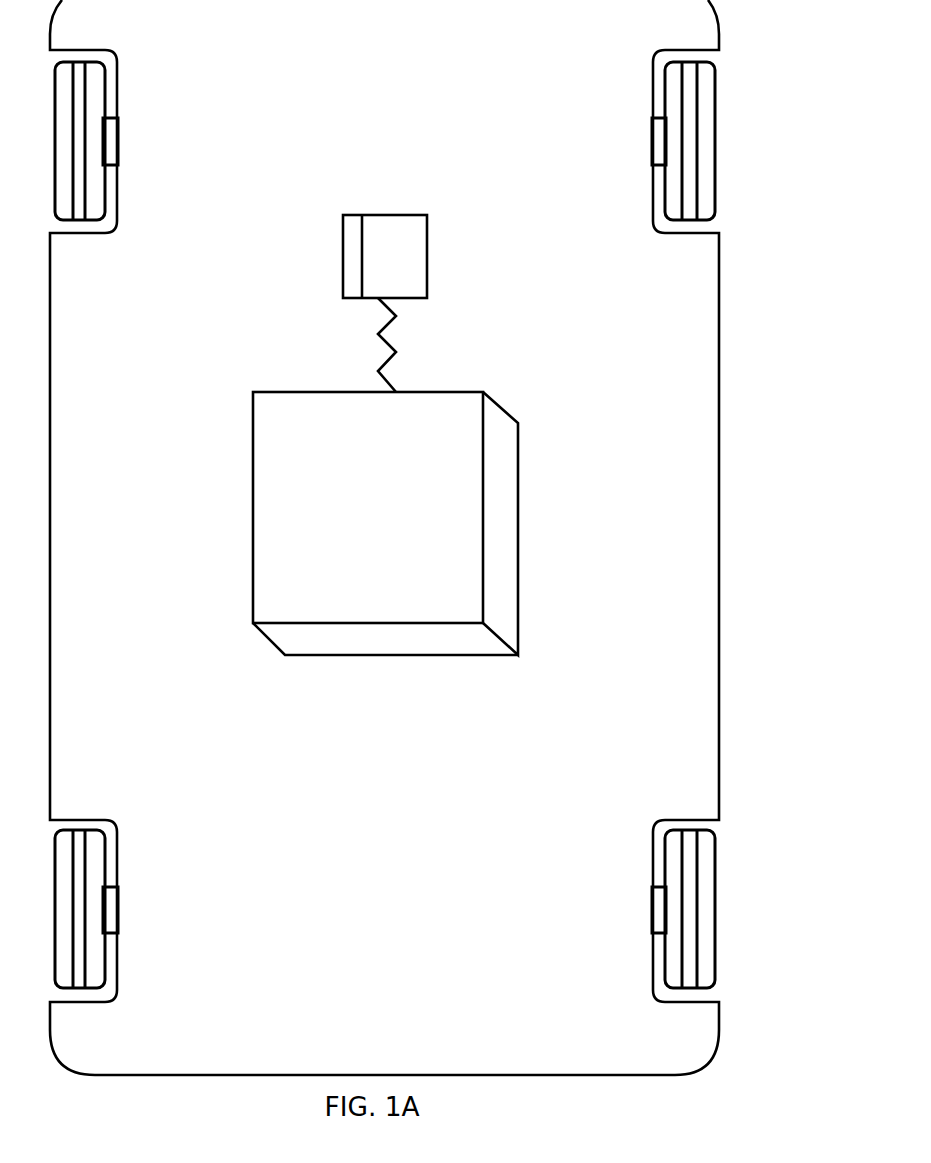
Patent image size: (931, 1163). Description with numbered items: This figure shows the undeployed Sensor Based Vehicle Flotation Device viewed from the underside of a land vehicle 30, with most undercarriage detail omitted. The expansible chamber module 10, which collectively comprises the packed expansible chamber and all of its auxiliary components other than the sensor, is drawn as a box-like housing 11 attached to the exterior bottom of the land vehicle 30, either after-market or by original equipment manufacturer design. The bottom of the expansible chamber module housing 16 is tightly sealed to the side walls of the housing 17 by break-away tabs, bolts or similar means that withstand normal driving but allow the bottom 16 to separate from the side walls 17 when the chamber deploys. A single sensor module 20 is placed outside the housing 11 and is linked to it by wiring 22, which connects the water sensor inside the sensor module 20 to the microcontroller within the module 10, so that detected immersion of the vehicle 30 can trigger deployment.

The expansible chamber module 10 is at (351, 523).
The housing 11 is at (253, 500).
The bottom of the expansible chamber module housing 16 is at (285, 580).
The side walls of the housing 17 is at (492, 533).
The sensor module 20 is at (343, 258).
The wiring 22 is at (375, 340).
The land vehicle 30 is at (722, 518).